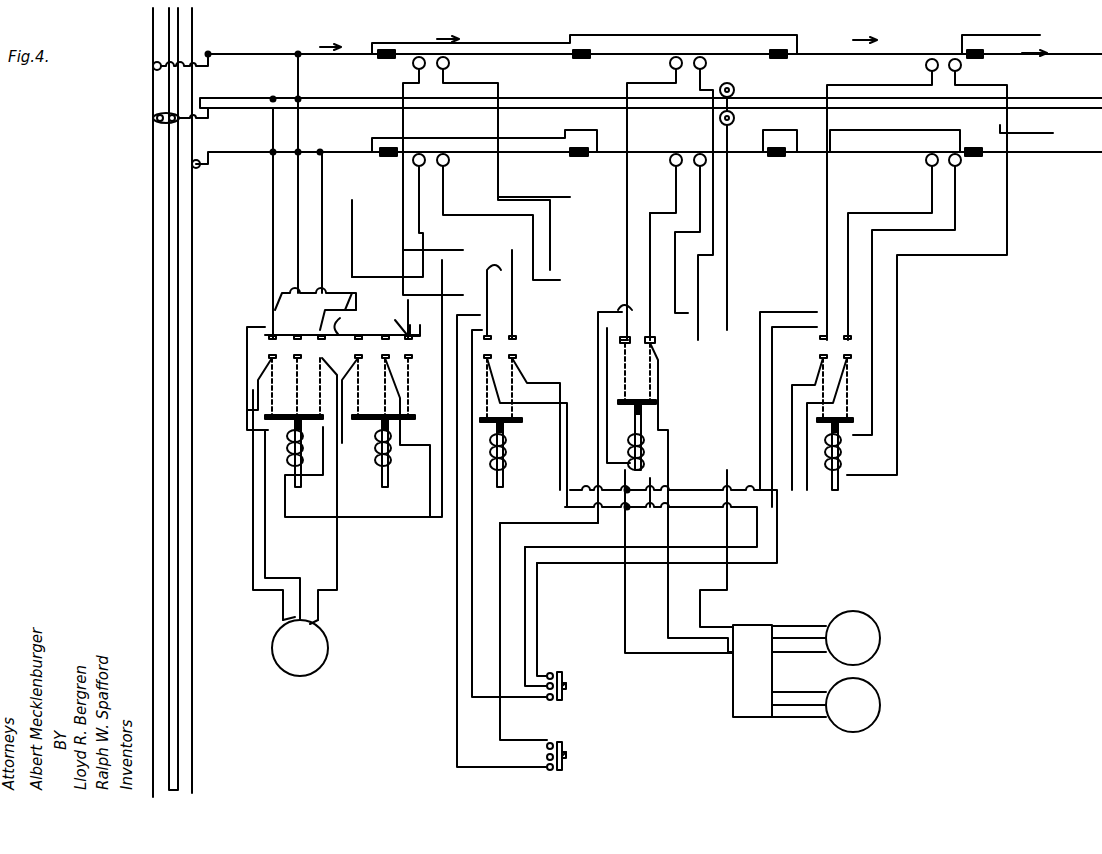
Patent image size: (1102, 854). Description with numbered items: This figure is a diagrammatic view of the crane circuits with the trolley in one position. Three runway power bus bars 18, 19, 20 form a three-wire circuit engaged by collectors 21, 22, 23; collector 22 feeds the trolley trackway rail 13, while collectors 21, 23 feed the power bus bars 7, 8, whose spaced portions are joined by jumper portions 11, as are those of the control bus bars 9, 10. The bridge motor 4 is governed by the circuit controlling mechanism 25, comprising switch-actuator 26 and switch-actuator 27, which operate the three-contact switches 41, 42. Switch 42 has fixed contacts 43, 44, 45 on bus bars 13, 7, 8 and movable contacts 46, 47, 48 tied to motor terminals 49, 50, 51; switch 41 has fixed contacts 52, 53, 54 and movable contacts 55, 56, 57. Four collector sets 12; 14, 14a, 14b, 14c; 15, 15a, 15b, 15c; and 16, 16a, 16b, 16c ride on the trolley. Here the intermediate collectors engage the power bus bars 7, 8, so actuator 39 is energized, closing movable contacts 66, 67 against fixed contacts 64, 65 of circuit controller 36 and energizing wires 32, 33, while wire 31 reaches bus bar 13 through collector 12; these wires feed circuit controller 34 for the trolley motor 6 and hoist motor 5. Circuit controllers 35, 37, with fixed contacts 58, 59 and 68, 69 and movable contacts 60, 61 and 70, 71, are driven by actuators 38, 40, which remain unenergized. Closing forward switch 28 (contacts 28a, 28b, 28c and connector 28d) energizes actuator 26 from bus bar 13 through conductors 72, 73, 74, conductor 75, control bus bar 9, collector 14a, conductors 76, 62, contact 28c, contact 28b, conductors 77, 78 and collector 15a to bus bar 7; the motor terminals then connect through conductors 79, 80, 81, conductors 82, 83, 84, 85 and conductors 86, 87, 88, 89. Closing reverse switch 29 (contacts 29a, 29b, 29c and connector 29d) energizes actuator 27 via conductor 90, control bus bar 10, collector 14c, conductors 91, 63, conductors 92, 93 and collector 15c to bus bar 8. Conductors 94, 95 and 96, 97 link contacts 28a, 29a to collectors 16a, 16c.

The bridge motor 4 is at (337, 644).
The hoist motor 5 is at (872, 702).
The trolley motor 6 is at (876, 648).
The power bus bar 7 is at (252, 54).
The power bus bar 8 is at (233, 152).
The control bus bar 9 is at (540, 72).
The control bus bar 10 is at (540, 166).
The jumper portions 11 is at (508, 43).
The collector 12 is at (735, 88).
The trolley trackway rail 13 is at (330, 98).
The collector 14 is at (449, 156).
The collector 14a is at (417, 57).
The collector 14b is at (444, 57).
The collector 14c is at (419, 154).
The collector 15 is at (702, 154).
The collector 15a is at (675, 57).
The collector 15b is at (702, 57).
The collector 15c is at (674, 154).
The collector 16 is at (955, 154).
The collector 16a is at (926, 67).
The collector 16b is at (962, 67).
The collector 16c is at (930, 154).
The power bus bar 18 is at (146, 265).
The power bus bar 19 is at (167, 345).
The power bus bar 20 is at (195, 236).
The collector 21 is at (152, 68).
The collector 22 is at (152, 120).
The collector 23 is at (200, 168).
The circuit controlling mechanism 25 is at (262, 306).
The switch-actuator 26 is at (392, 460).
The switch-actuator 27 is at (286, 449).
The forward switch 28 is at (580, 699).
The contact 28a is at (550, 672).
The contact 28b is at (554, 684).
The contact 28c is at (556, 700).
The connector 28d is at (566, 683).
The reverse switch 29 is at (580, 770).
The contact 29a is at (547, 742).
The contact 29b is at (546, 760).
The contact 29c is at (552, 770).
The connector 29d is at (566, 752).
The wire 31 is at (710, 603).
The wire 32 is at (668, 596).
The wire 33 is at (626, 606).
The circuit controller 34 is at (746, 727).
The circuit controller 35 is at (533, 415).
The circuit controller 36 is at (654, 402).
The circuit controller 37 is at (866, 420).
The actuator 38 is at (508, 466).
The actuator 39 is at (646, 455).
The actuator 40 is at (844, 461).
The three-contact switch 41 is at (400, 311).
The three-contact switch 42 is at (257, 352).
The contact 43 is at (268, 336).
The contact 44 is at (315, 300).
The contact 45 is at (347, 323).
The movable contact 46 is at (268, 360).
The movable contact 47 is at (292, 346).
The movable contact 48 is at (315, 346).
The motor terminal 49 is at (280, 624).
The motor terminal 50 is at (288, 618).
The motor terminal 51 is at (318, 620).
The contact 52 is at (351, 332).
The contact 53 is at (385, 334).
The contact 54 is at (412, 334).
The movable contact 55 is at (347, 350).
The movable contact 56 is at (374, 348).
The movable contact 57 is at (401, 377).
The fixed contact 58 is at (490, 320).
The fixed contact 59 is at (520, 333).
The movable contact 60 is at (525, 422).
The movable contact 61 is at (518, 350).
The conductor 62 is at (470, 642).
The conductor 63 is at (455, 720).
The fixed contact 64 is at (618, 315).
The fixed contact 65 is at (652, 330).
The movable contact 66 is at (615, 341).
The movable contact 67 is at (658, 340).
The fixed contact 68 is at (819, 340).
The fixed contact 69 is at (852, 336).
The movable contact 70 is at (819, 360).
The movable contact 71 is at (853, 357).
The conductor 72 is at (270, 264).
The conductor 73 is at (248, 408).
The conductor 74 is at (382, 500).
The conductor 75 is at (355, 202).
The conductor 76 is at (402, 87).
The conductor 77 is at (527, 608).
The conductor 78 is at (625, 228).
The conductor 79 is at (254, 534).
The conductor 80 is at (290, 400).
The conductor 81 is at (332, 285).
The conductor 82 is at (268, 551).
The conductor 83 is at (344, 444).
The conductor 84 is at (420, 318).
The conductor 85 is at (310, 239).
The conductor 86 is at (340, 577).
The conductor 87 is at (360, 418).
The conductor 88 is at (352, 290).
The conductor 89 is at (273, 239).
The conductor 90 is at (426, 520).
The conductor 91 is at (508, 268).
The conductor 92 is at (550, 522).
The conductor 93 is at (673, 206).
The conductor 94 is at (777, 542).
The conductor 95 is at (826, 244).
The conductor 96 is at (797, 312).
The conductor 97 is at (846, 201).